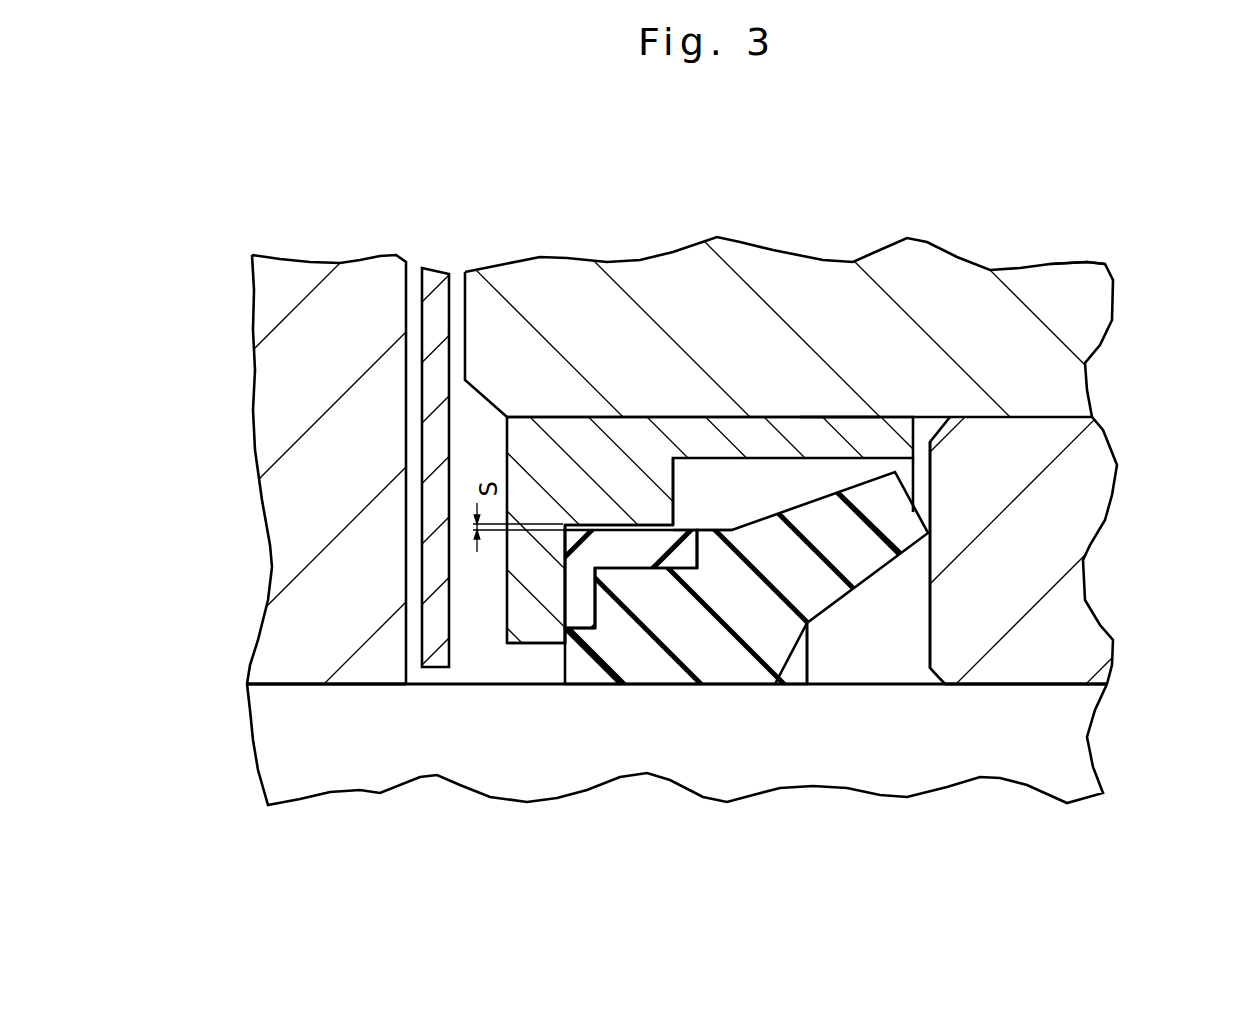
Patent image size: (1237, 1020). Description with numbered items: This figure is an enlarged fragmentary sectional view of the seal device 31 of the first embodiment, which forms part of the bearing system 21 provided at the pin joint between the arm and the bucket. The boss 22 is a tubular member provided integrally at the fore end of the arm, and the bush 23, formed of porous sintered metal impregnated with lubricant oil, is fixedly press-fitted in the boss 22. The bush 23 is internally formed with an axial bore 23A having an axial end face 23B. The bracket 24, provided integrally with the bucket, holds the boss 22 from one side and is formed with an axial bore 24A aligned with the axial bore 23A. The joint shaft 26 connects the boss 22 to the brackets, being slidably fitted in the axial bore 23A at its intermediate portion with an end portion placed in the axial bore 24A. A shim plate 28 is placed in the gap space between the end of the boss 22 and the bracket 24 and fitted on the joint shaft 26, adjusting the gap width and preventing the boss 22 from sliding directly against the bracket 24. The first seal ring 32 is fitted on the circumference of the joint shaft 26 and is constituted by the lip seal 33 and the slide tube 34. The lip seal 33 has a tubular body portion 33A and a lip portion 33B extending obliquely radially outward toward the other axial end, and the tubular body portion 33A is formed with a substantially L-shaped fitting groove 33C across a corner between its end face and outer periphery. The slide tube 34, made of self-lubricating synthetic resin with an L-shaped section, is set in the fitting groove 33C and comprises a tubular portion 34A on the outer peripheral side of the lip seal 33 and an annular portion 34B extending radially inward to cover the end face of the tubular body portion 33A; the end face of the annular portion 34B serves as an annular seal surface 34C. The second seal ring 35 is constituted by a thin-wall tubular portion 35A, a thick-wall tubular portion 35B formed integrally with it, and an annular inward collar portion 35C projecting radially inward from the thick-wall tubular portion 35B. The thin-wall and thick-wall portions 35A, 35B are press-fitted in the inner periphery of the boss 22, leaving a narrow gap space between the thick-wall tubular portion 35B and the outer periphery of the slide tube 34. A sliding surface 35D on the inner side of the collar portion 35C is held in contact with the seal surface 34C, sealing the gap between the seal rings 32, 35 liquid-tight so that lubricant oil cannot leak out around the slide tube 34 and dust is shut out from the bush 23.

The bearing system 21 is at (1091, 250).
The boss 22 is at (721, 510).
The bush 23 is at (799, 510).
The axial bore 23A is at (1074, 702).
The axial end face 23B is at (923, 664).
The bracket 24 is at (504, 510).
The axial bore 24A is at (279, 703).
The joint shaft 26 is at (677, 785).
The shim plate 28 is at (543, 510).
The seal device 31 is at (840, 273).
The first seal ring 32 is at (739, 330).
The lip seal 33 is at (618, 510).
The tubular body portion 33A is at (771, 737).
The lip portion 33B is at (869, 672).
The fitting groove 33C is at (606, 757).
The slide tube 34 is at (661, 510).
The tubular portion 34A is at (712, 708).
The annular portion 34B is at (565, 710).
The annular seal surface 34C is at (535, 742).
The second seal ring 35 is at (618, 510).
The thin-wall tubular portion 35A is at (918, 344).
The thick-wall tubular portion 35B is at (650, 350).
The annular inward collar portion 35C is at (488, 688).
The sliding surface 35D is at (605, 350).